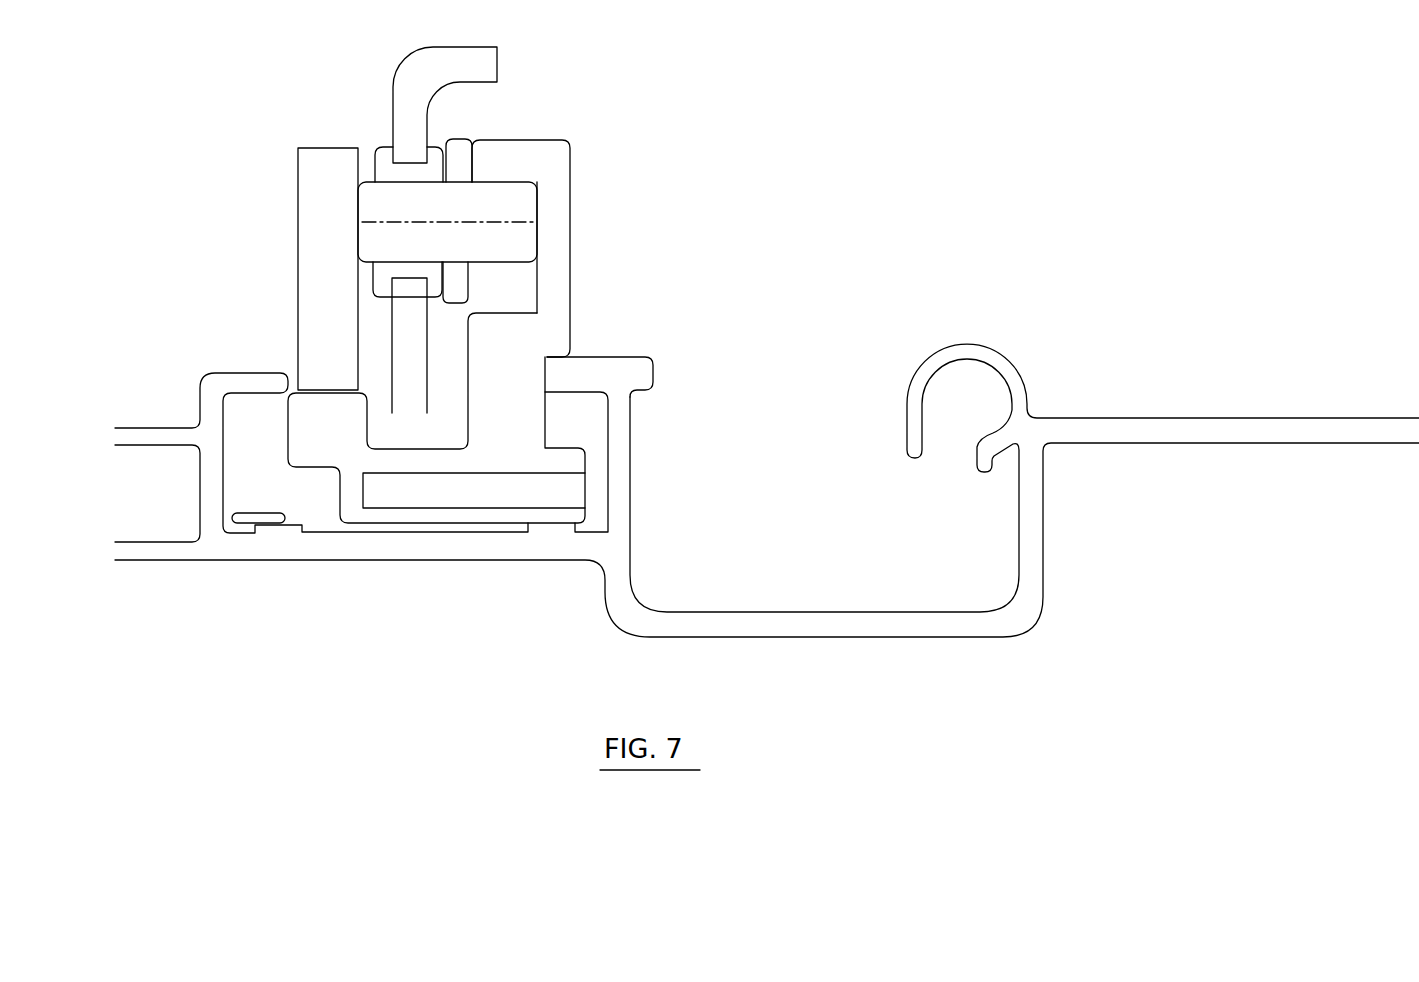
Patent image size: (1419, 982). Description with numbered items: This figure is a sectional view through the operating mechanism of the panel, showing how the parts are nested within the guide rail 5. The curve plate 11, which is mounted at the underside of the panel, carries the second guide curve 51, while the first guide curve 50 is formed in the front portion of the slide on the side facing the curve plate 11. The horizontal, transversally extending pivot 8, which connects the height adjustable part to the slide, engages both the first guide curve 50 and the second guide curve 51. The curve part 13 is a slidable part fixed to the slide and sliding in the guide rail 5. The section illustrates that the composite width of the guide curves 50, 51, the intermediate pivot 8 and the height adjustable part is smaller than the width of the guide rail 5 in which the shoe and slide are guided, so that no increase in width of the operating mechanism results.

The curve plate 11 is at (485, 66).
The second guide curve 51 is at (408, 267).
The first guide curve 50 is at (508, 314).
The pivot 8 is at (527, 247).
The curve part 13 is at (553, 320).
The guide rail 5 is at (642, 375).